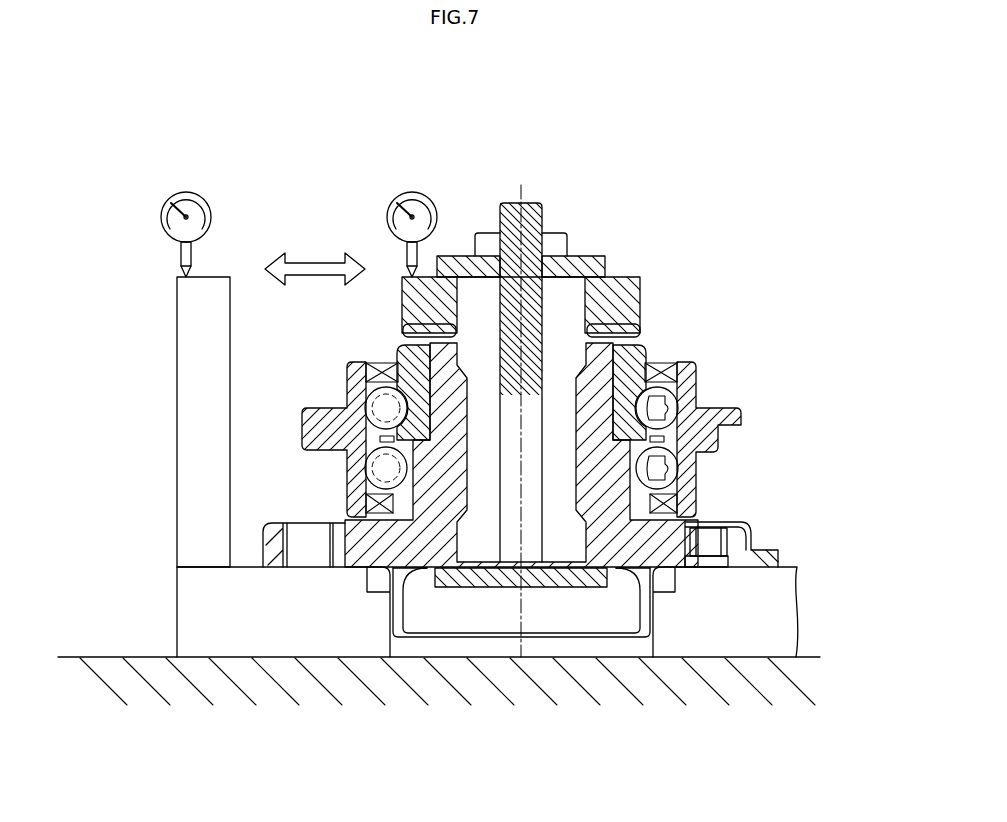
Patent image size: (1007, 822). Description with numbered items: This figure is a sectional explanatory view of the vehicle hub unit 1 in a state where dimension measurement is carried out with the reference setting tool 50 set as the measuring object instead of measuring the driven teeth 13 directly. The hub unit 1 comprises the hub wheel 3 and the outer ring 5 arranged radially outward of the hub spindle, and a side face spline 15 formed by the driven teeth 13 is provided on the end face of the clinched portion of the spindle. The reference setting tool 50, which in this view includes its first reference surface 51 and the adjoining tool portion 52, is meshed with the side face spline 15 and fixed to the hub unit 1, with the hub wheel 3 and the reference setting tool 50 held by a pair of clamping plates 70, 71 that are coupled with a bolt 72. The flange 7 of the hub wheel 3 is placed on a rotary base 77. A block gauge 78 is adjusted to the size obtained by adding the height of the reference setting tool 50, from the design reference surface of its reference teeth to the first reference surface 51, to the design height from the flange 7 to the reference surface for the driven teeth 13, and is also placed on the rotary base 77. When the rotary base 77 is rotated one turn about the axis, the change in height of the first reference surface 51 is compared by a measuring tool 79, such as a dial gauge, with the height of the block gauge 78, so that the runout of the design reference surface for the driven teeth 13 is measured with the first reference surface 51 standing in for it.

The vehicle hub unit 1 is at (541, 427).
The hub wheel 3 is at (737, 512).
The outer ring 5 is at (724, 381).
The flange 7 is at (274, 565).
The driven teeth 13 is at (403, 304).
The side face spline 15 is at (392, 333).
The reference setting tool 50 is at (573, 341).
The first reference surface 51 is at (628, 275).
The pressing block 52 is at (642, 303).
The clamping plate 70 is at (567, 590).
The clamping plate 71 is at (584, 270).
The bolt 72 is at (526, 202).
The rotary base 77 is at (720, 640).
The block gauge 78 is at (177, 497).
The measuring tool 79 is at (190, 191).